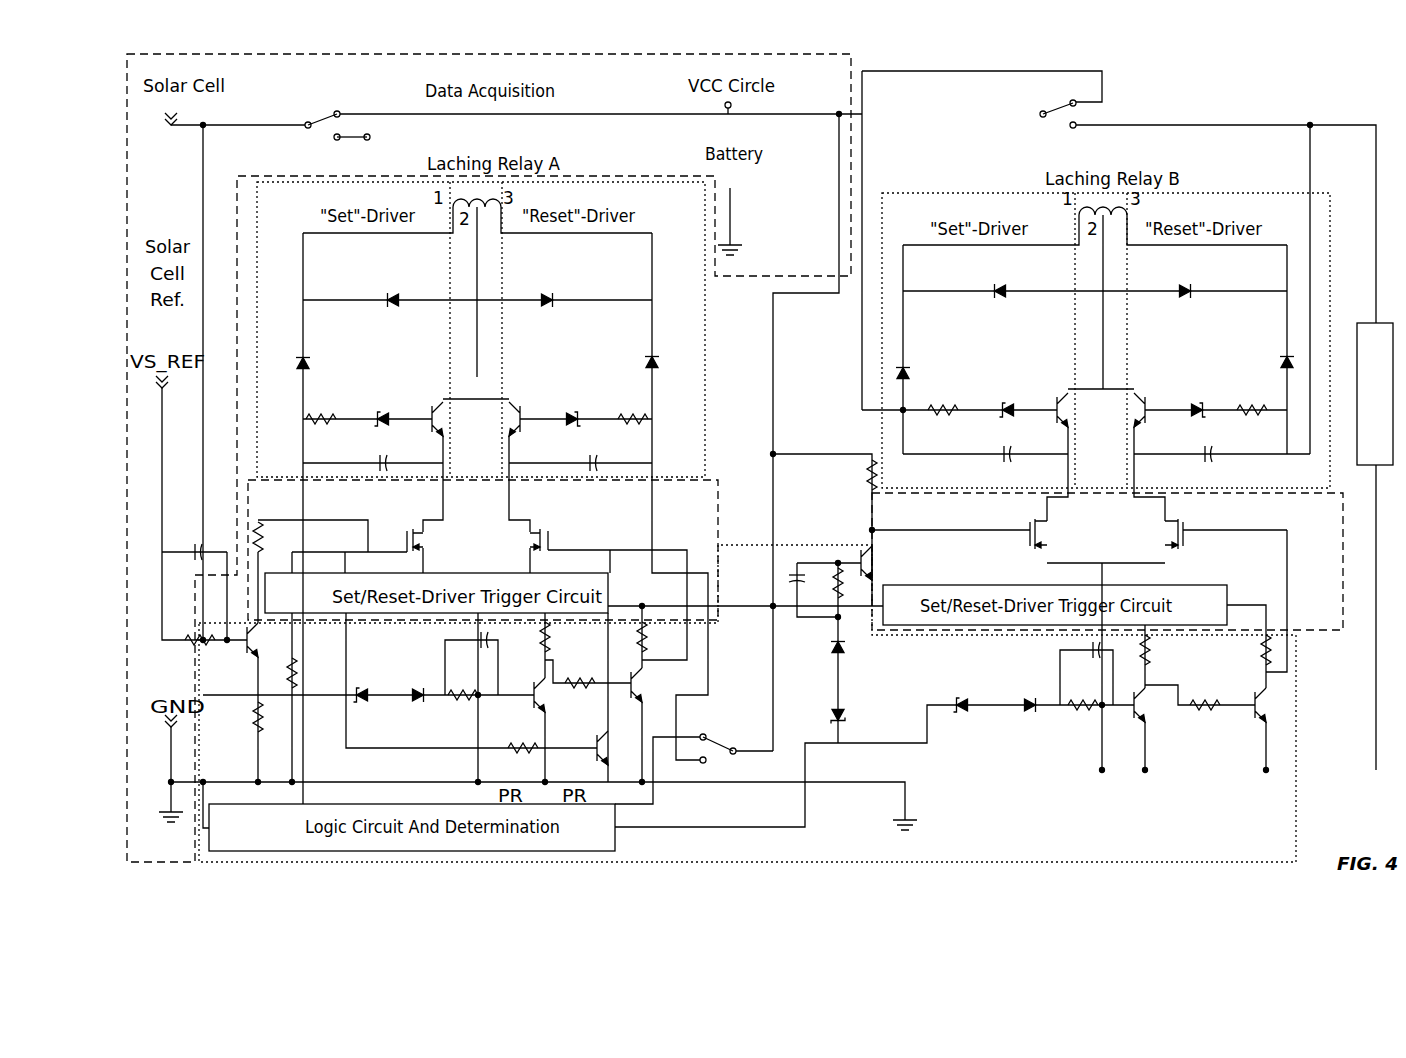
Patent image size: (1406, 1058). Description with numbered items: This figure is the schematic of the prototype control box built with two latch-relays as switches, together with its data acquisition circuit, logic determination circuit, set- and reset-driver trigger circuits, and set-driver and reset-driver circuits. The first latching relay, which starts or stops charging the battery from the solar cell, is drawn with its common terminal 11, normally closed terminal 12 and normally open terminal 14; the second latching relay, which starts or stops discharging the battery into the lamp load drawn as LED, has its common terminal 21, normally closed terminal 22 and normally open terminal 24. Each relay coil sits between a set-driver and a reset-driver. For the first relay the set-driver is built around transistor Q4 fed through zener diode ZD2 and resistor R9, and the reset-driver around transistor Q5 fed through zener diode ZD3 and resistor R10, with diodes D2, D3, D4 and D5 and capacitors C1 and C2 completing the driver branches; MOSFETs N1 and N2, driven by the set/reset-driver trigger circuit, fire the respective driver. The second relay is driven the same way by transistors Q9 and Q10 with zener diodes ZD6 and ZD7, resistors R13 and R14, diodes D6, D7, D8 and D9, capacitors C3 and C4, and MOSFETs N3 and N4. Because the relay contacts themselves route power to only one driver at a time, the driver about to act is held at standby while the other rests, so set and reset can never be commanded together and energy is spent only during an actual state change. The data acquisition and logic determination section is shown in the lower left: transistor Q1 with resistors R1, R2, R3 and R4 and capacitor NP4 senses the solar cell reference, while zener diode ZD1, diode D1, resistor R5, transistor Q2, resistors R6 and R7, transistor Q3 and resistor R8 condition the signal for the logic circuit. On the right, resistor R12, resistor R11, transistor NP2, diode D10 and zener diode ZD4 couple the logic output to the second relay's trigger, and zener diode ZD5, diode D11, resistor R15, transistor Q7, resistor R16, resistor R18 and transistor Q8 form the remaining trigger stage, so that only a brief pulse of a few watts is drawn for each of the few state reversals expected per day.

The common terminal of latching relay 11 is at (655, 114).
The normally closed terminal of latching relay A 12 is at (343, 94).
The normally open terminal of latching relay 14 is at (729, 115).
The common terminal of latching relay B 21 is at (764, 732).
The normally closed terminal of latching relay B 22 is at (732, 710).
The normally open terminal of latching relay B 24 is at (735, 761).
The light emitting diode LED is at (1375, 394).
The resistor R1 is at (190, 652).
The resistor R2 is at (275, 536).
The resistor R3 is at (244, 719).
The resistor R4 is at (279, 676).
The resistor R5 is at (461, 708).
The resistor R6 is at (560, 638).
The resistor R7 is at (581, 695).
The resistor R8 is at (657, 638).
The resistor R9 is at (325, 430).
The resistor R10 is at (630, 419).
The resistor R11 is at (821, 592).
The resistor R12 is at (848, 476).
The resistor R13 is at (945, 423).
The resistor R14 is at (1249, 423).
The resistor R15 is at (1081, 722).
The resistor R16 is at (1162, 650).
The resistor R18 is at (1247, 650).
The diode D1 is at (421, 684).
The diode D2 is at (320, 364).
The diode D3 is at (395, 312).
The diode D4 is at (550, 312).
The diode D5 is at (667, 364).
The diode D6 is at (922, 374).
The diode D7 is at (1004, 306).
The diode D8 is at (1186, 306).
The diode D9 is at (1272, 361).
The diode D10 is at (821, 649).
The diode D11 is at (1014, 685).
The zener diode ZD1 is at (367, 711).
The zener diode ZD2 is at (387, 407).
The zener diode ZD3 is at (585, 407).
The zener diode ZD4 is at (823, 704).
The zener diode ZD5 is at (961, 693).
The zener diode ZD6 is at (1001, 399).
The zener diode ZD7 is at (1206, 399).
The capacitor C1 is at (402, 455).
The capacitor C2 is at (578, 455).
The capacitor C3 is at (1024, 464).
The capacitor C4 is at (1193, 464).
The capacitor NP4 is at (185, 539).
The transistor NP2 is at (802, 569).
The transistor Q1 is at (249, 647).
The transistor Q2 is at (530, 682).
The transistor Q3 is at (650, 685).
The transistor Q4 is at (437, 408).
The transistor Q5 is at (515, 408).
The transistor Q7 is at (1140, 715).
The transistor Q8 is at (1254, 712).
The transistor Q9 is at (1059, 400).
The transistor Q10 is at (1140, 400).
The MOSFET N1 is at (414, 546).
The MOSFET N2 is at (540, 546).
The MOSFET N3 is at (1035, 538).
The MOSFET N4 is at (1175, 538).